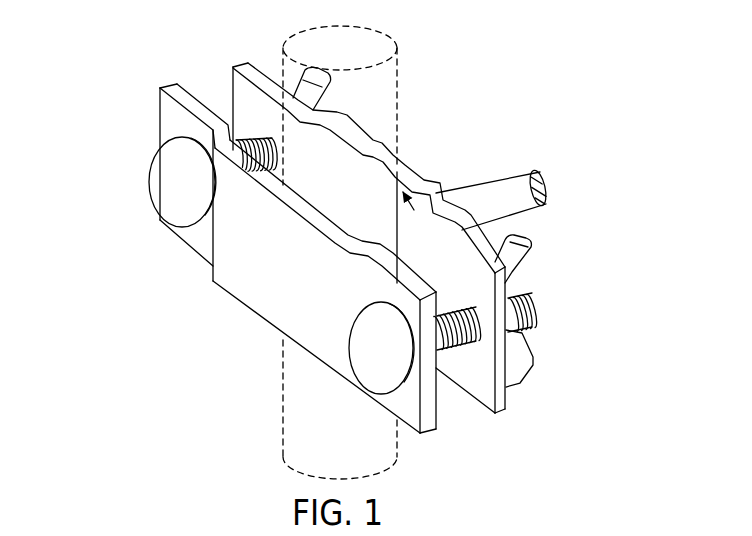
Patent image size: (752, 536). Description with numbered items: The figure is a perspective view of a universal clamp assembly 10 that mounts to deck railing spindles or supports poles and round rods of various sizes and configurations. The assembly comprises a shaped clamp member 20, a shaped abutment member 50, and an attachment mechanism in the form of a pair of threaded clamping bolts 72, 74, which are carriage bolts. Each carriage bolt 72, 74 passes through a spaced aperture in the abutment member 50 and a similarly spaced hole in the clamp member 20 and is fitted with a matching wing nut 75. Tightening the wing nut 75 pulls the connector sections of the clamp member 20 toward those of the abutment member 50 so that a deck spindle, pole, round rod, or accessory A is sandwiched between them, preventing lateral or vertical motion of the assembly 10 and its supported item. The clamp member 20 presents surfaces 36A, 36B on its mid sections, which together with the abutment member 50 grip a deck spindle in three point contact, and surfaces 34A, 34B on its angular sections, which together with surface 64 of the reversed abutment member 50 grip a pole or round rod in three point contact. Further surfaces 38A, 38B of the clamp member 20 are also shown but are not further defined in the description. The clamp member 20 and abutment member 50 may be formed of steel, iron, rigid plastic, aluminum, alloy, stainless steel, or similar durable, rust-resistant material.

The universal clamp assembly 10 is at (92, 160).
The abutment member 50 is at (263, 218).
The clamp member 20 is at (242, 67).
The surface of angular section 34B is at (390, 185).
The surface of mid section 36B is at (400, 182).
The second hook portion B 38B is at (434, 192).
The accessory A is at (537, 180).
The wing nut 75 is at (517, 250).
The carriage bolt 72 is at (170, 183).
The surface of abutment member 64 is at (247, 233).
The first hook portion A 38A is at (305, 135).
The surface of mid section 36A is at (337, 152).
The surface of angular section 34A is at (383, 168).
The carriage bolt 74 is at (382, 363).